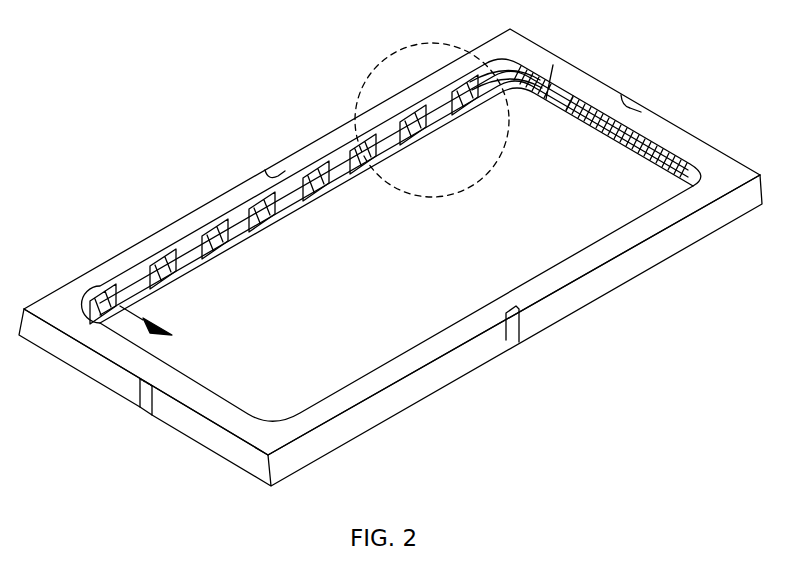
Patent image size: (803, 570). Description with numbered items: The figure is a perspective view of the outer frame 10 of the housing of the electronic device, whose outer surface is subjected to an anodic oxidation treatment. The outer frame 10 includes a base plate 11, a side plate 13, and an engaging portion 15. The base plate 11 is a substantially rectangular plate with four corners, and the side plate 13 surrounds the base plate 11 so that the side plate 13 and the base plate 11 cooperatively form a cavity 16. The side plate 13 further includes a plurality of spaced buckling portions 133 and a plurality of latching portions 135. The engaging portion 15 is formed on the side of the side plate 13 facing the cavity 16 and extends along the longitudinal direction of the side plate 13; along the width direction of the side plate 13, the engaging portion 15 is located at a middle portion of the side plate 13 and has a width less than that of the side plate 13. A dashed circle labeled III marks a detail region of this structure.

The outer frame 10 is at (658, 138).
The base plate 11 is at (357, 330).
The side plate 13 is at (570, 272).
The engaging portion 15 is at (387, 137).
The cavity 16 is at (102, 292).
The buckling portions 133 is at (433, 100).
The latching portions 135 is at (493, 67).
The section view indicator III is at (393, 53).